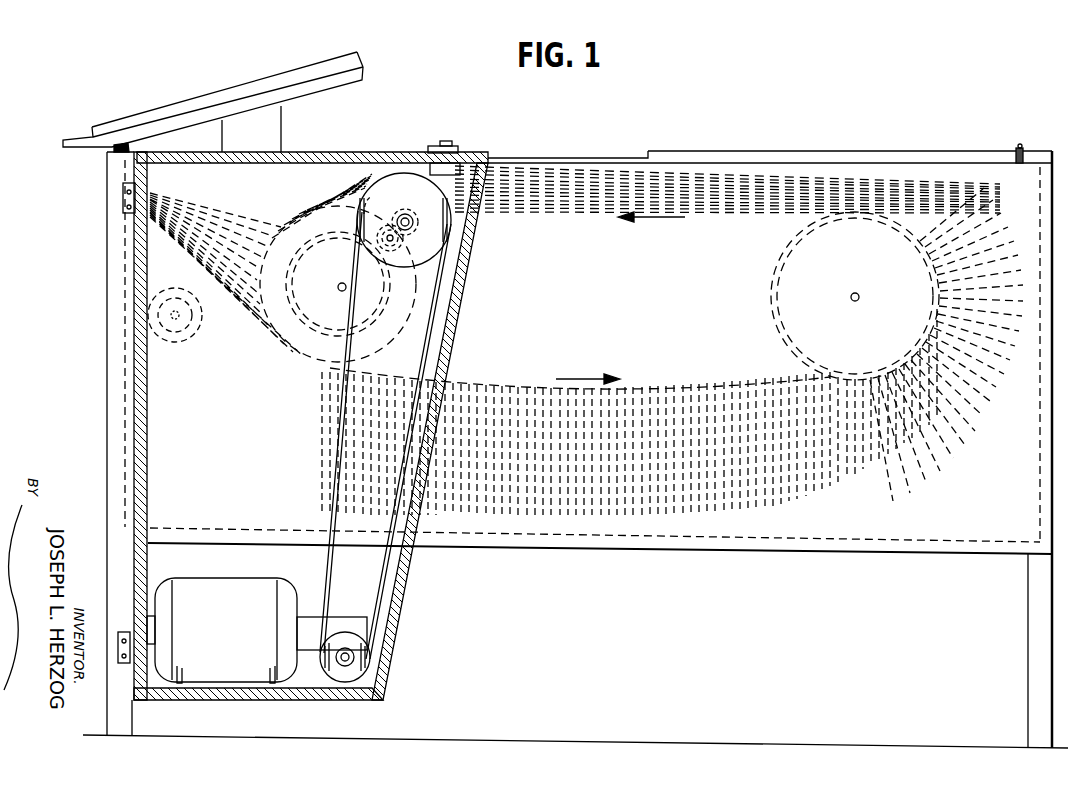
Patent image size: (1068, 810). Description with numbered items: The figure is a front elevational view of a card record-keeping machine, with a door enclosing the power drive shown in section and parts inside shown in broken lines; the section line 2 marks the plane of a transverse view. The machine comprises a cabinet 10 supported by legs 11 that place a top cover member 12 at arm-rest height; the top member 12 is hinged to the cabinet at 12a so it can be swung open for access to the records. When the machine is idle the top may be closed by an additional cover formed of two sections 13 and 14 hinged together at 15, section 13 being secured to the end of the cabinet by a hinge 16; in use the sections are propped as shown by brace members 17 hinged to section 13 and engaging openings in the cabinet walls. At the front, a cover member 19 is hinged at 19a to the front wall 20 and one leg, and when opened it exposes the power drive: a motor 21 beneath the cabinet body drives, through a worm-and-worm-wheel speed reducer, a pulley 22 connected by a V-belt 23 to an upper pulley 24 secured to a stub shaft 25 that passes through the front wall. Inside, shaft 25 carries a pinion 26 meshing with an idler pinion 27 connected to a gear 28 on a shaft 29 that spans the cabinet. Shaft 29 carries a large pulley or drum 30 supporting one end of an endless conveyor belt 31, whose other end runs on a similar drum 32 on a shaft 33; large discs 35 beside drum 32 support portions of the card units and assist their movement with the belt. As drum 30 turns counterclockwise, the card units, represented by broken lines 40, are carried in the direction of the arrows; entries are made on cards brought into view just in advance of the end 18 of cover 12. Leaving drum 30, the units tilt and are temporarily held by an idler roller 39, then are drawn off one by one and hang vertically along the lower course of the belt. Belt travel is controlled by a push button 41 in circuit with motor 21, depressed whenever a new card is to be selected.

The section line 2- 2 is at (25, 112).
The cabinet 10 is at (768, 556).
The legs 11 is at (1028, 688).
The top cover member 12 is at (818, 150).
The hinge connection of top member 12a is at (1020, 147).
The cover section 13 is at (348, 78).
The cover section 14 is at (193, 104).
The hinge between cover sections 15 is at (360, 52).
The hinge 16 is at (118, 150).
The brace members 17 is at (268, 130).
The end of cover 18 is at (648, 153).
The cover member 19 is at (403, 590).
The hinge connection of cover member 19a is at (122, 200).
The front wall 20 is at (157, 470).
The motor 21 is at (200, 586).
The pulley 22 is at (362, 663).
The V-belt 23 is at (328, 590).
The upper pulley 24 is at (452, 214).
The stub shaft 25 is at (414, 230).
The pinion 26 is at (362, 219).
The idler pinion 27 is at (397, 262).
The gear 28 is at (338, 284).
The shaft 29 is at (340, 280).
The large pulley or drum 30 is at (313, 360).
The belt 31 is at (500, 384).
The pulley or drum 32 is at (786, 318).
The shaft 33 is at (851, 291).
The disc 35 is at (772, 296).
The idler roller 39 is at (186, 341).
The card units 40 is at (918, 499).
The push button 41 is at (449, 147).